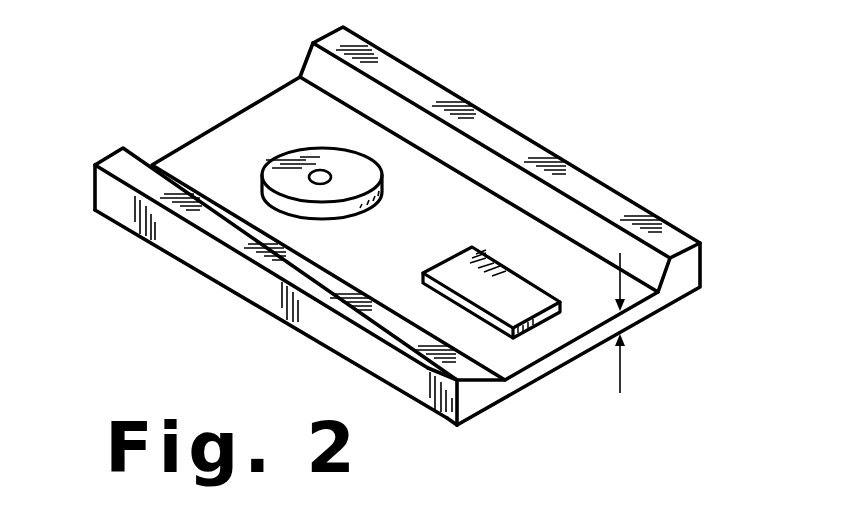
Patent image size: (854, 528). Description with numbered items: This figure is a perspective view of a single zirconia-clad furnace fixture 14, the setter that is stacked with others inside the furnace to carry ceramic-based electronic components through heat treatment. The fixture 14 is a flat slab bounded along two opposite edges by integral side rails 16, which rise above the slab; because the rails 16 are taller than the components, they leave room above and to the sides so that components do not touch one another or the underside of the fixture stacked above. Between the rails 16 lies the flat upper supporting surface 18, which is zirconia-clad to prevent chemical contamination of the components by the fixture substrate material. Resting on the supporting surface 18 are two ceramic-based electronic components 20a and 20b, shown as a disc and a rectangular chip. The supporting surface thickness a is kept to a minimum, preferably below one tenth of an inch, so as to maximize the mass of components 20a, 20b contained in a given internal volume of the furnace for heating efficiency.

The zirconia-clad fixture 14 is at (402, 226).
The side rails 16 is at (598, 193).
The upper supporting surface 18 is at (445, 229).
The ceramic-based electronic component 20a is at (303, 167).
The ceramic-based electronic component 20b is at (517, 311).
The supporting surface thickness a is at (622, 342).